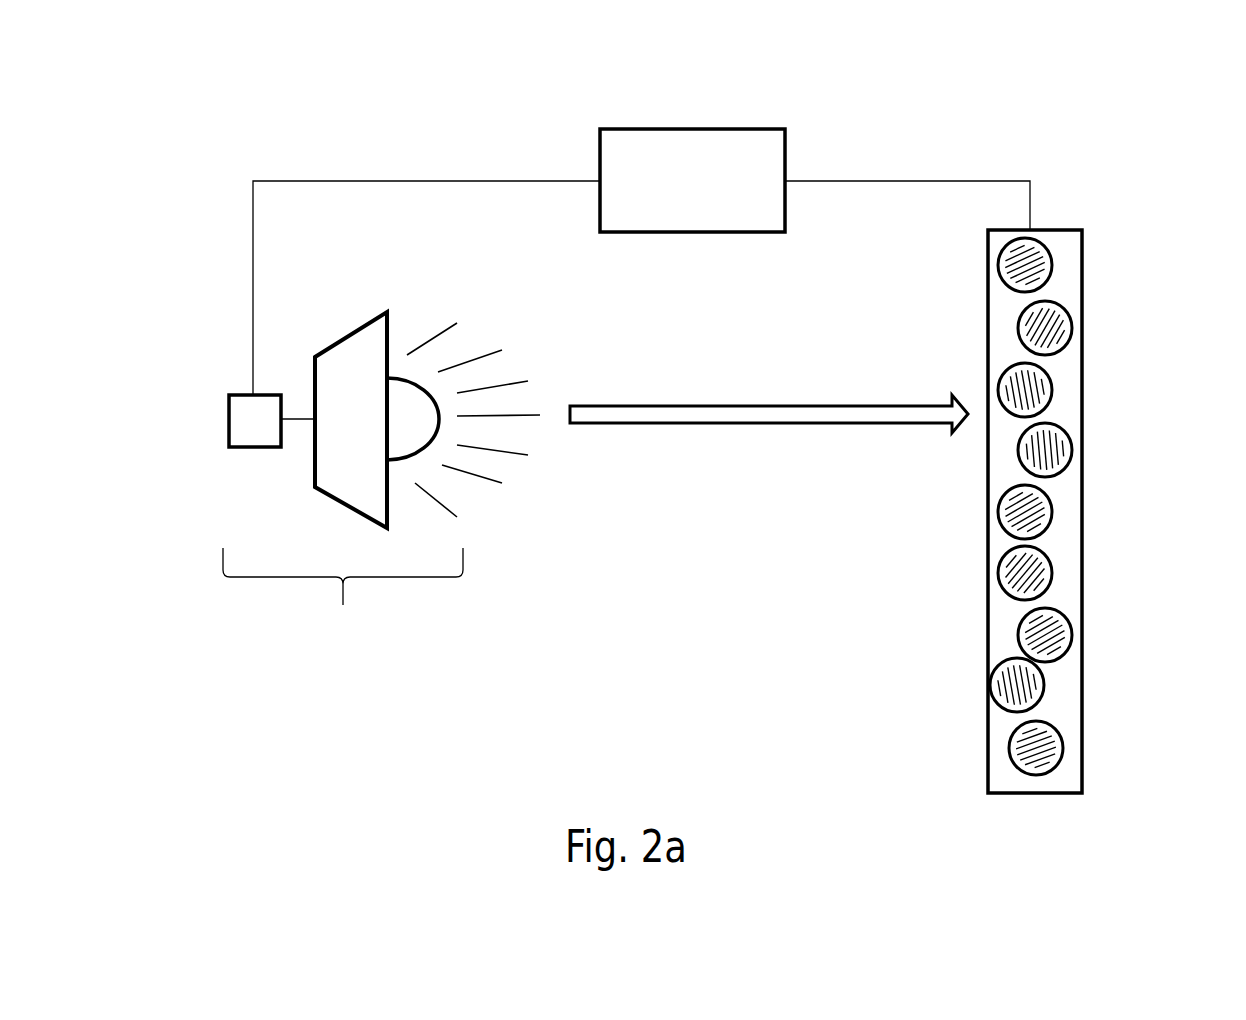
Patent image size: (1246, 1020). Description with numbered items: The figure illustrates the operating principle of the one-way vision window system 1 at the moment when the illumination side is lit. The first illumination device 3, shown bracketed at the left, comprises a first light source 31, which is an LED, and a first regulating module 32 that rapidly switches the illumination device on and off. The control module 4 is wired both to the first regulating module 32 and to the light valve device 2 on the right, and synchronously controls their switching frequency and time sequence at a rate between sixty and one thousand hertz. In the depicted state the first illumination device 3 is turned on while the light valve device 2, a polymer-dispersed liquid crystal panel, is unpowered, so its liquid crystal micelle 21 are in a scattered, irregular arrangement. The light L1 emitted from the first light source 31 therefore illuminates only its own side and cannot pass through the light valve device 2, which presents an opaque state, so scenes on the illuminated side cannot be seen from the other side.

The one-way vision window system 1 is at (274, 153).
The light valve device 2 is at (1101, 511).
The liquid crystal micelle 21 is at (1060, 312).
The first illumination device 3 is at (343, 597).
The first light source 31 is at (355, 345).
The first regulating module 32 is at (245, 432).
The control module 4 is at (672, 148).
The light L1 is at (769, 430).